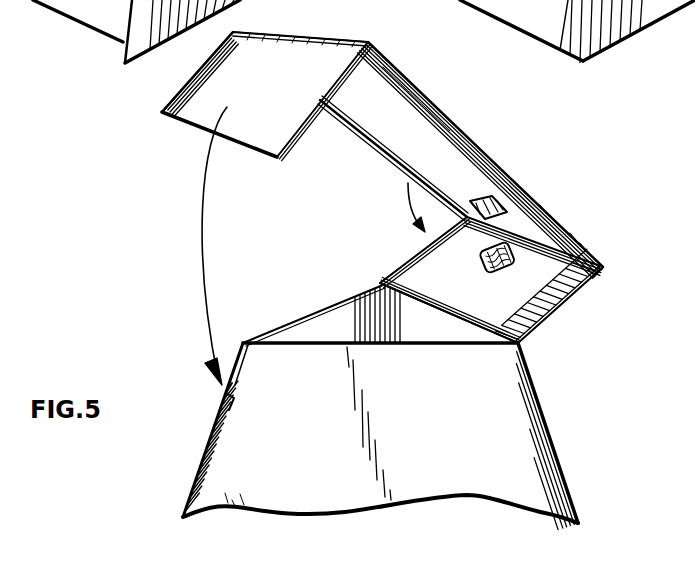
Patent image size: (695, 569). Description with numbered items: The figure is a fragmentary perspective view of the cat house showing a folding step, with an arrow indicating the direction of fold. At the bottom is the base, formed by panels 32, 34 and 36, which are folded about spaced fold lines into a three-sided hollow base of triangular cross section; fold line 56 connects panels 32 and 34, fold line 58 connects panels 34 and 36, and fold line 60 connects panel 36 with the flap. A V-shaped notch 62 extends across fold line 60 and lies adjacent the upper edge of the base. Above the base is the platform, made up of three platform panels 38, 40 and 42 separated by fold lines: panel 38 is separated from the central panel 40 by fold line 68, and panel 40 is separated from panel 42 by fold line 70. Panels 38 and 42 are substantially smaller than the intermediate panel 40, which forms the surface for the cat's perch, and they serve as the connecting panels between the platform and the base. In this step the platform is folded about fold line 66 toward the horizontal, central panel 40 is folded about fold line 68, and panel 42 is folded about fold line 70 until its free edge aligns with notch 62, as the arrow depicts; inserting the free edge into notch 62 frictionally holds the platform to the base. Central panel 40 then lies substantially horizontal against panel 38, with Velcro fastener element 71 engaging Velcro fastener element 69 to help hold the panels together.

The panel 32 is at (478, 440).
The panel 34 is at (302, 333).
The panel 36 is at (355, 297).
The platform panel 38 is at (515, 317).
The central panel 40 is at (453, 160).
The panel 42 is at (222, 105).
The fold line 56 is at (563, 460).
The fold line 58 is at (384, 286).
The fold line 60 is at (200, 467).
The V-shaped notch 62 is at (230, 400).
The fold line 66 is at (407, 284).
The fold line 68 is at (578, 240).
The Velcro fastener element 69 is at (516, 268).
The fold line 70 is at (320, 37).
The Velcro fastener element 71 is at (478, 211).